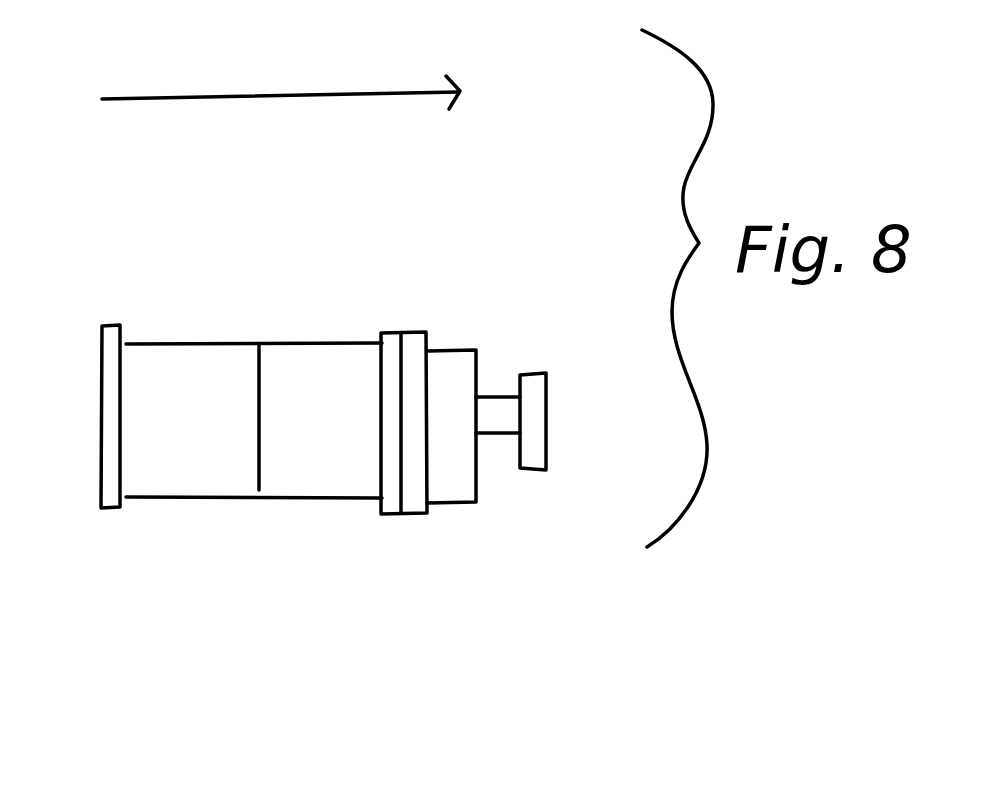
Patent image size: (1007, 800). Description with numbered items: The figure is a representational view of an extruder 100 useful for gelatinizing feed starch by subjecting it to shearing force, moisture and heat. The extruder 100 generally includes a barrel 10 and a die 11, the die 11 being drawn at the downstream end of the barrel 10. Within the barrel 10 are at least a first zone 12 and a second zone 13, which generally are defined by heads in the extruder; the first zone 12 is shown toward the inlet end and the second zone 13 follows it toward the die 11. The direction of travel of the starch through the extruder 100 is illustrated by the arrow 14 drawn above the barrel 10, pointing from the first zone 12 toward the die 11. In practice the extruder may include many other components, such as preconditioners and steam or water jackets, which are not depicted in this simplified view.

The extruder 100 is at (323, 426).
The barrel 10 is at (287, 337).
The die 11 is at (497, 396).
The first zone 12 is at (183, 387).
The second zone 13 is at (310, 472).
The arrow 14 is at (281, 111).